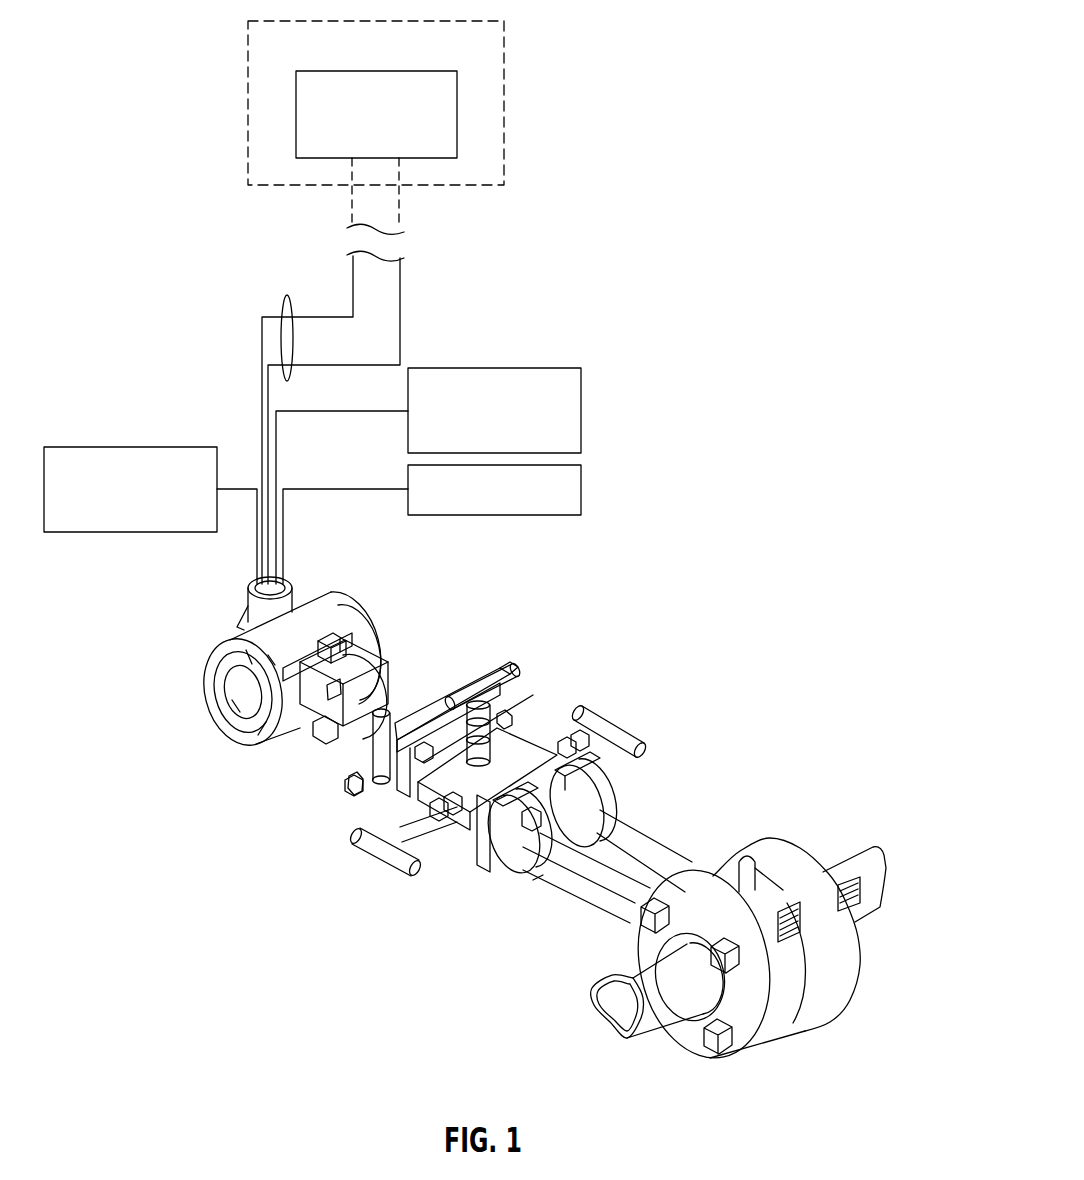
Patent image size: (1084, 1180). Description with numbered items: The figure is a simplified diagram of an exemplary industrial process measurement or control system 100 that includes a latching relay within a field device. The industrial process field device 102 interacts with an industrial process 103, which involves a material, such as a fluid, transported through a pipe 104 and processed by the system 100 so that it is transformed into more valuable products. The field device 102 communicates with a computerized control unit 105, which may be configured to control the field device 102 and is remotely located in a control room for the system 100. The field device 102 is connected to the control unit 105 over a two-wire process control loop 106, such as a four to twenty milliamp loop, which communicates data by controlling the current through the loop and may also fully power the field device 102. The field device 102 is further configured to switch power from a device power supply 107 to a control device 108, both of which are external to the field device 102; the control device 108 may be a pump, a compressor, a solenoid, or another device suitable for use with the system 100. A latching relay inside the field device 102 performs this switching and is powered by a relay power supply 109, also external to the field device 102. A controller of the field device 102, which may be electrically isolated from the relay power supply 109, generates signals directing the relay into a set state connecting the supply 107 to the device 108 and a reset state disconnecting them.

The industrial process measurement or control system 100 is at (718, 261).
The industrial process field device 102 is at (297, 825).
The industrial process 103 is at (874, 933).
The pipe 104 is at (645, 1018).
The computerized control unit 105 is at (296, 106).
The two-wire process control loop 106 is at (283, 306).
The device power supply 107 is at (513, 368).
The control device 108 is at (513, 515).
The relay power supply 109 is at (110, 447).